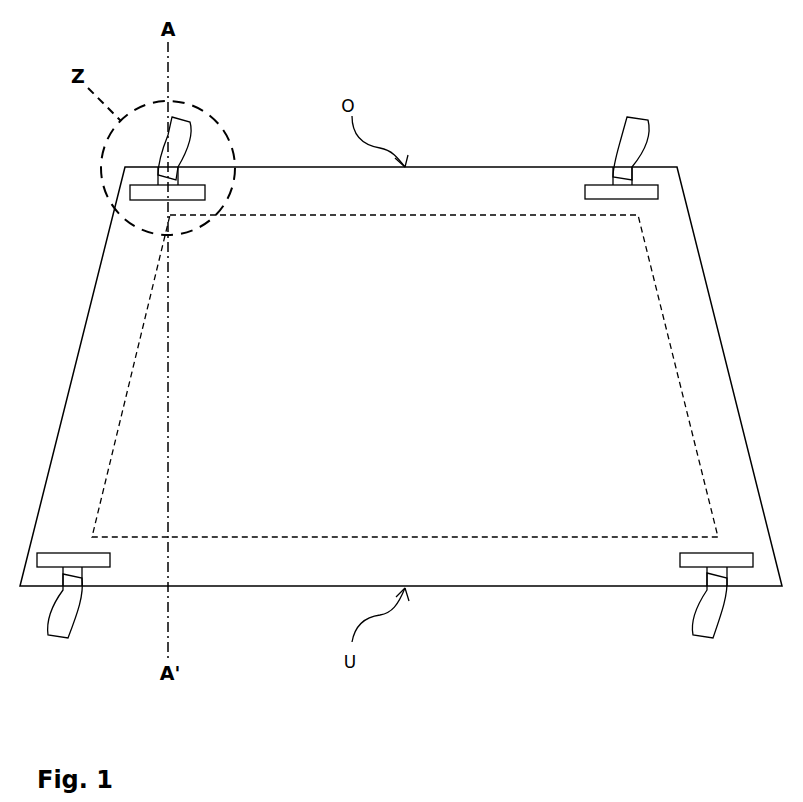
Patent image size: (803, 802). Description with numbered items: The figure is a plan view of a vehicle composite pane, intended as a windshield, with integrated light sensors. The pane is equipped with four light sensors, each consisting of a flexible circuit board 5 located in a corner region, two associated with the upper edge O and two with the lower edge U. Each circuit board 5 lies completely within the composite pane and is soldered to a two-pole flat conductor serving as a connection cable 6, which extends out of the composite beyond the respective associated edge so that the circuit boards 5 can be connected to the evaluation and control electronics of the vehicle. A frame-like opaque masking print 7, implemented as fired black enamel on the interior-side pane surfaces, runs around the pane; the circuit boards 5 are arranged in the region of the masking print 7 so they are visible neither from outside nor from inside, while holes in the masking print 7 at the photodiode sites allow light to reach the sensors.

The flexible circuit board 5 is at (200, 183).
The connection cable 6 is at (185, 127).
The masking print 7 is at (476, 192).